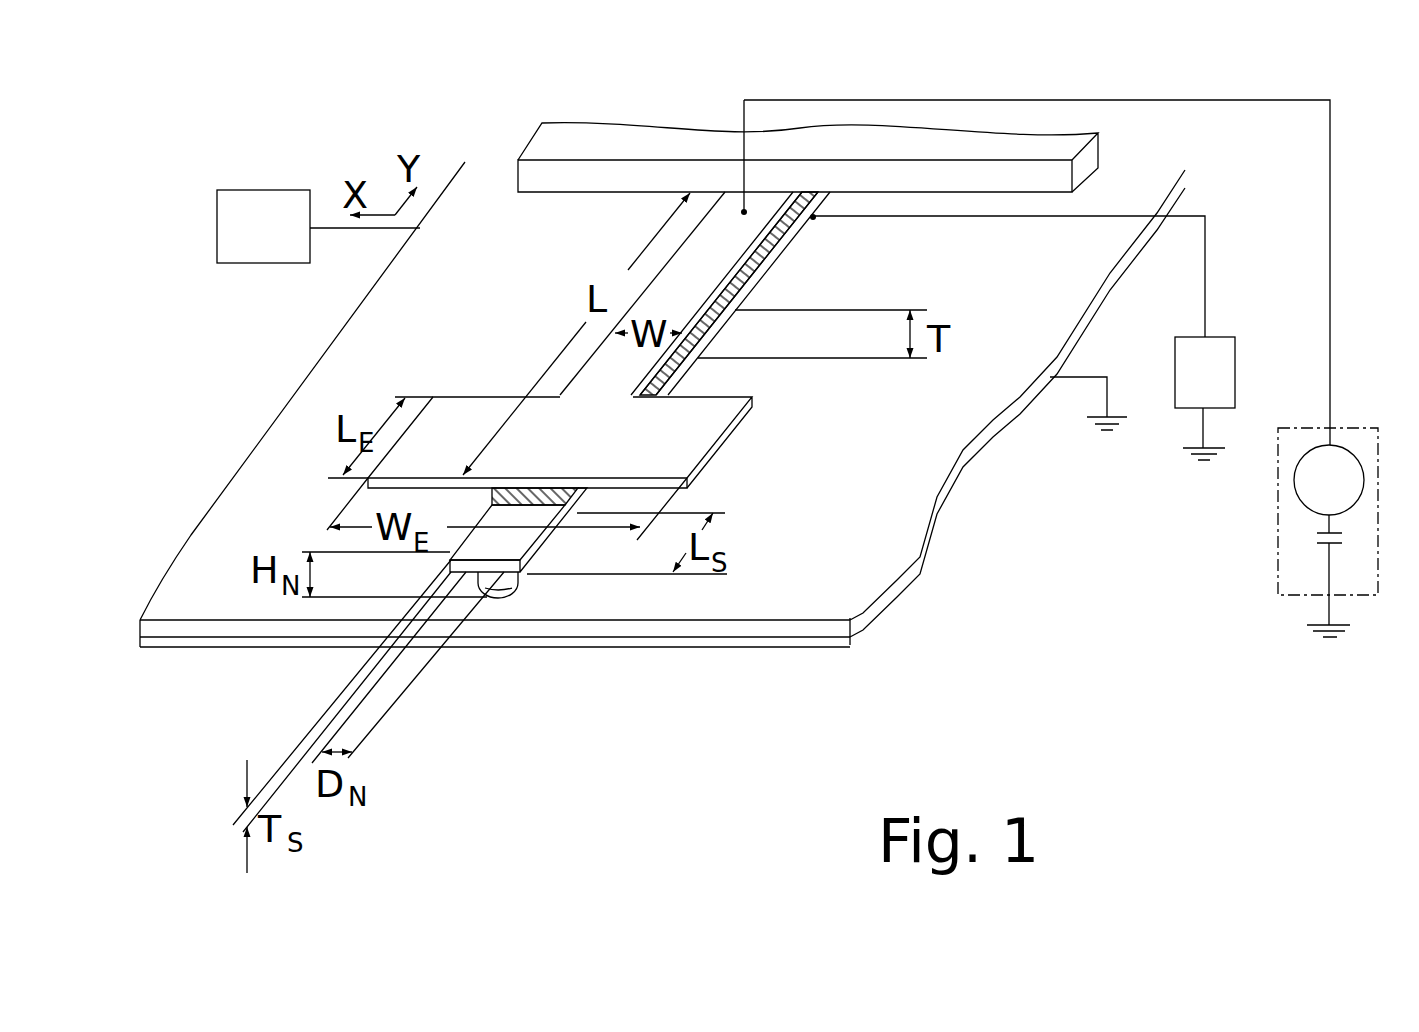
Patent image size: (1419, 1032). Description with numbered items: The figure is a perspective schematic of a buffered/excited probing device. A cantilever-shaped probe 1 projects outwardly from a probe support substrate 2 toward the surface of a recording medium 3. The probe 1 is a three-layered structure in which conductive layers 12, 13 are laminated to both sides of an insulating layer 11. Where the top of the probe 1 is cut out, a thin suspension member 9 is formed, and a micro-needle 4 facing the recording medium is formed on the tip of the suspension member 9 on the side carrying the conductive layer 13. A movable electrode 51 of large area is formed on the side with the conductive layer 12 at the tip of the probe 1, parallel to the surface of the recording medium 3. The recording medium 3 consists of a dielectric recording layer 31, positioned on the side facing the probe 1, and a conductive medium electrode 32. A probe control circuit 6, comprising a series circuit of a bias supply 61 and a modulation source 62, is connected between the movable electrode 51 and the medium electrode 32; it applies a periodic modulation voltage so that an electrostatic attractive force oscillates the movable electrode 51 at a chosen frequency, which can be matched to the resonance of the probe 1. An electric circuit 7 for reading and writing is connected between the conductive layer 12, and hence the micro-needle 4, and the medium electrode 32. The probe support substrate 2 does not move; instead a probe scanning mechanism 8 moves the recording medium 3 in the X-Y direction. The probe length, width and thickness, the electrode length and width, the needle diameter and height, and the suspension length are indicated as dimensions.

The cantilever-shaped probe 1 is at (513, 347).
The probe support substrate 2 is at (1088, 175).
The recording medium 3 is at (278, 404).
The micro-needle 4 is at (507, 597).
The probe control circuit 6 is at (1294, 519).
The electric circuit for reading/writing 7 is at (1233, 290).
The probe scanning mechanism 8 is at (275, 190).
The suspension member 9 is at (525, 583).
The insulating layer 11 is at (807, 228).
The conductive layer 12 is at (748, 232).
The conductive layer 13 is at (765, 275).
The recording layer 31 is at (658, 607).
The medium electrode 32 is at (920, 557).
The movable electrode 51 is at (753, 408).
The bias supply 61 is at (1345, 543).
The modulation source 62 is at (1350, 452).